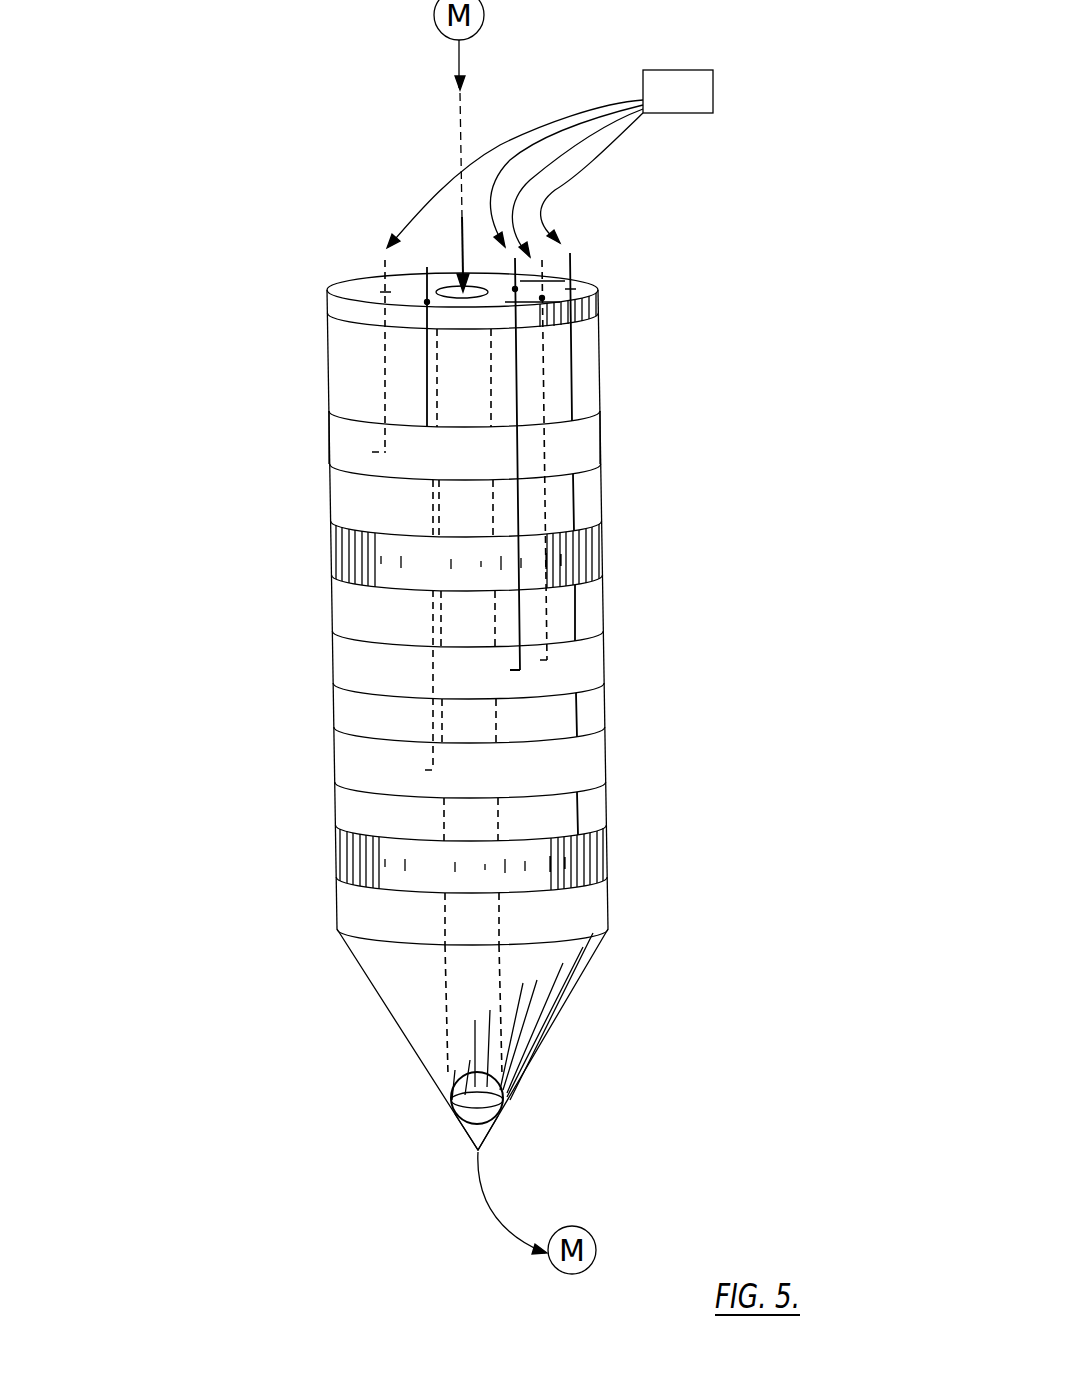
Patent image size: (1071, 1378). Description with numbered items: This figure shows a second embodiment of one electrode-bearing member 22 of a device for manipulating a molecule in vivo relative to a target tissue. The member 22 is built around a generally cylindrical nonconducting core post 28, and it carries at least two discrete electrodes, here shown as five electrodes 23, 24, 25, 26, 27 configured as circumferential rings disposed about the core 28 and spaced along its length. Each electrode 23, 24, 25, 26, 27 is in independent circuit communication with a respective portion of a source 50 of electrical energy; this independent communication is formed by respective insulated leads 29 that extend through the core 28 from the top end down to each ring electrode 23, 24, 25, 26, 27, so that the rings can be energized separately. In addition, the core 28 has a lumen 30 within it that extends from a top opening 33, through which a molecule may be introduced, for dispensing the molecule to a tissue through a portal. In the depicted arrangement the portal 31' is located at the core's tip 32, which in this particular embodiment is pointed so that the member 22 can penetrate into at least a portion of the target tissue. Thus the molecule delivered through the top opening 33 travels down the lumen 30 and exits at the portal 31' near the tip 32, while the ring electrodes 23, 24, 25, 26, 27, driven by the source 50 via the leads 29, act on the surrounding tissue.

The member 22 is at (717, 530).
The electrode 23 is at (292, 858).
The electrode 24 is at (283, 763).
The electrode 25 is at (281, 668).
The electrode 26 is at (277, 555).
The electrode 27 is at (267, 462).
The nonconducting core post 28 is at (262, 350).
The insulated leads 29 is at (532, 145).
The lumen 30 is at (473, 383).
The portal 31' is at (558, 1028).
The core tip 32 is at (487, 1143).
The top opening 33 is at (430, 250).
The source of electrical energy 50 is at (663, 108).